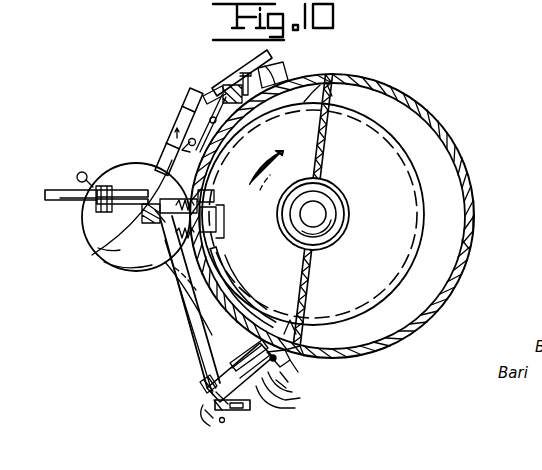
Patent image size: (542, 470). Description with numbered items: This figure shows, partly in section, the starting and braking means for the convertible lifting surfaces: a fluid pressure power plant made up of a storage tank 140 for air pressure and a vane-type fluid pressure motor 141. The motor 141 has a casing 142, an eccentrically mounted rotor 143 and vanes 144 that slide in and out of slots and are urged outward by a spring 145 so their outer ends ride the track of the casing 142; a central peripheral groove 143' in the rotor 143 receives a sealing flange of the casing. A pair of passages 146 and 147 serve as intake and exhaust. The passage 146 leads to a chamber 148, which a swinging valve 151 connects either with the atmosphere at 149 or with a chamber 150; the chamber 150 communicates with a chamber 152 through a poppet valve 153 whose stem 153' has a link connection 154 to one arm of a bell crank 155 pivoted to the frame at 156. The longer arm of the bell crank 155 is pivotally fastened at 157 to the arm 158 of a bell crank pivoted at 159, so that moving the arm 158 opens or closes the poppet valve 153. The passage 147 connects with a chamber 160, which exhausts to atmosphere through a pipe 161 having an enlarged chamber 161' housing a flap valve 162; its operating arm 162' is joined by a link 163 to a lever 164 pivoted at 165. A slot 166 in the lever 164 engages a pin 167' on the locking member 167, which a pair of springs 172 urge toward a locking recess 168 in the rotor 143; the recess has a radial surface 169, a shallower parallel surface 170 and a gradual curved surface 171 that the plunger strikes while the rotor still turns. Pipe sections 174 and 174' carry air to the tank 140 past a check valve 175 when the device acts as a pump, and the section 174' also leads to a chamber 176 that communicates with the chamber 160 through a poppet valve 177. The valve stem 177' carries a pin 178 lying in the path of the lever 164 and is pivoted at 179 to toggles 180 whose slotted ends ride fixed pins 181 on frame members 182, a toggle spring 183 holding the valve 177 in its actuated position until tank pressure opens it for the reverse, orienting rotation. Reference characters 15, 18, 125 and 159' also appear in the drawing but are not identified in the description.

The shaft 15 is at (334, 226).
The rotary disc 18 is at (343, 211).
The support bar 125 is at (58, 190).
The storage tank 140 is at (114, 270).
The fluid pressure motor 141 is at (484, 140).
The casing 142 is at (476, 202).
The rotor disk 143 is at (497, 226).
The groove 143' is at (476, 250).
The vanes 144 is at (344, 82).
The spring 145 is at (325, 169).
The passage 146 is at (320, 82).
The passage 147 is at (256, 306).
The chamber 148 is at (278, 72).
The atmosphere connection 149 is at (268, 68).
The chamber 150 is at (235, 72).
The swinging valve 151 is at (258, 60).
The chamber 152 is at (200, 96).
The poppet valve 153 is at (212, 83).
The stem 153' is at (189, 95).
The link connection 154 is at (190, 108).
The bell crank 155 is at (198, 158).
The pivot 156 is at (195, 142).
The pivot 157 is at (162, 182).
The bell crank arm 158 is at (132, 208).
The pivot 159 is at (83, 184).
The stop bar 159' is at (72, 212).
The chamber 160 is at (305, 358).
The pipe 161 is at (318, 369).
The enlarged chamber 161' is at (307, 372).
The flap valve 162 is at (301, 385).
The operating arm 162' is at (313, 393).
The link 163 is at (296, 410).
The lever 164 is at (216, 354).
The pivot 165 is at (208, 339).
The slot 166 is at (145, 208).
The locking member 167 is at (139, 249).
The pin 167' is at (87, 258).
The locking recess 168 is at (205, 211).
The radial surface 169 is at (216, 199).
The parallel surface 170 is at (216, 231).
The curved surface 171 is at (220, 241).
The springs 172 is at (166, 262).
The pipe portion 174 is at (260, 284).
The pipe section 174' is at (170, 292).
The check valve 175 is at (292, 323).
The chamber 176 is at (212, 372).
The poppet valve 177 is at (259, 289).
The valve stem 177' is at (279, 415).
The pin 178 is at (230, 395).
The pivot 179 is at (216, 411).
The toggles 180 is at (213, 396).
The fixed pins 181 is at (203, 388).
The frame members 182 is at (300, 400).
The toggle spring 183 is at (246, 411).